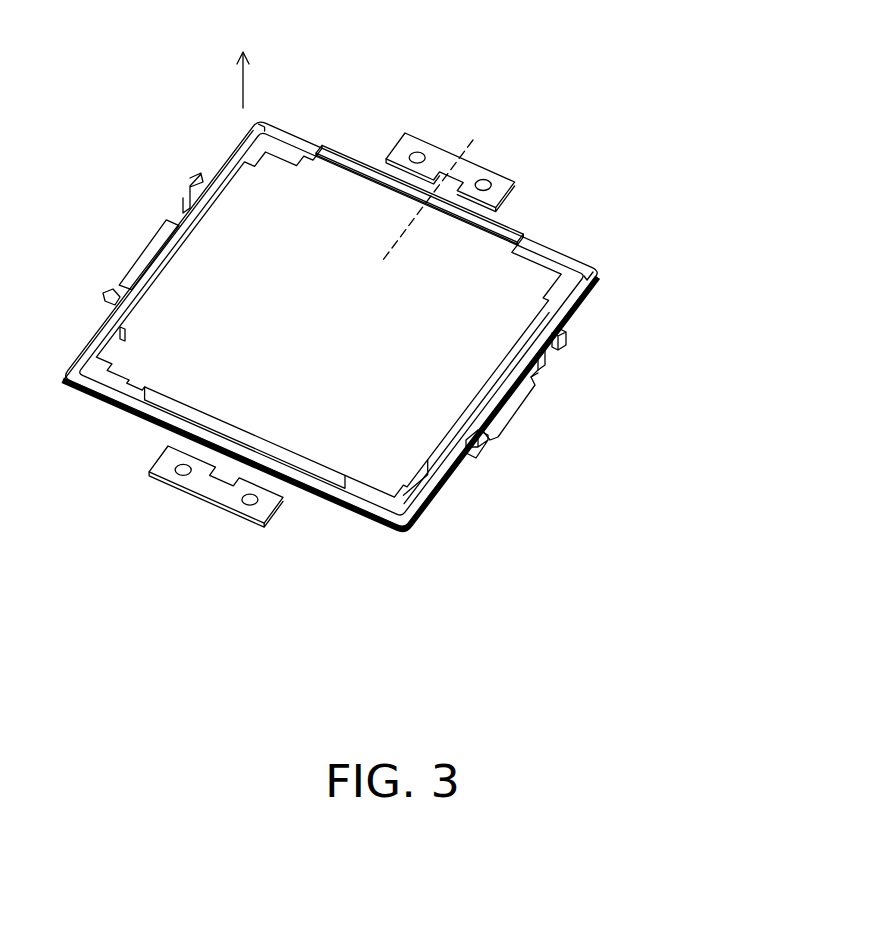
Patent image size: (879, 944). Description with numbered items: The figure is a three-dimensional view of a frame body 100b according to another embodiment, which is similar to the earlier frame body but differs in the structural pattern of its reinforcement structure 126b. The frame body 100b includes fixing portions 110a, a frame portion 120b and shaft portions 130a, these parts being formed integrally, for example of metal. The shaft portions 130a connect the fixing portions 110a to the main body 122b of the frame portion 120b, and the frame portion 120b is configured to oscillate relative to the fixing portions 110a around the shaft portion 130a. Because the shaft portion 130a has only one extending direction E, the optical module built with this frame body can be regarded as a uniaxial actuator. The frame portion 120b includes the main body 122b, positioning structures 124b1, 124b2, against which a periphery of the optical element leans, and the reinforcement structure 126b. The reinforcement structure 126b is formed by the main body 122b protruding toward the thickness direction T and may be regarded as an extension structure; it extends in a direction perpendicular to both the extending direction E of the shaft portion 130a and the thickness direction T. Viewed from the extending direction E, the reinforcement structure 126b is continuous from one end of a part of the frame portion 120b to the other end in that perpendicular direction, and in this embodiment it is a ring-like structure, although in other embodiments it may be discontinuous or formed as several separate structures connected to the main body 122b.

The frame body 100b is at (425, 347).
The fixing portion 110a is at (477, 172).
The shaft portion 130a is at (510, 210).
The frame portion 120b is at (425, 325).
The main body 122b is at (600, 278).
The positioning structure 124b1 is at (523, 240).
The positioning structure 124b2 is at (565, 335).
The reinforcement structure 126b is at (563, 312).
The extending direction E is at (438, 184).
The thickness direction T is at (243, 65).